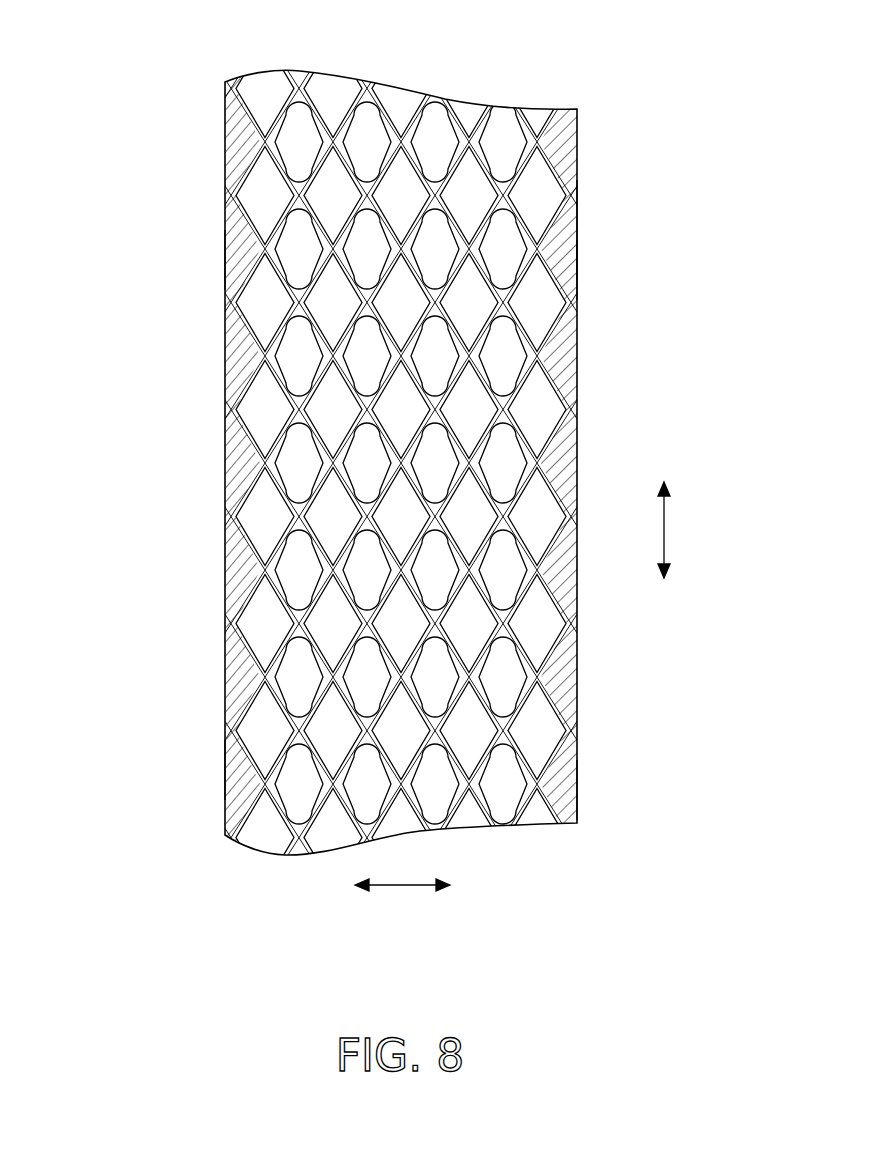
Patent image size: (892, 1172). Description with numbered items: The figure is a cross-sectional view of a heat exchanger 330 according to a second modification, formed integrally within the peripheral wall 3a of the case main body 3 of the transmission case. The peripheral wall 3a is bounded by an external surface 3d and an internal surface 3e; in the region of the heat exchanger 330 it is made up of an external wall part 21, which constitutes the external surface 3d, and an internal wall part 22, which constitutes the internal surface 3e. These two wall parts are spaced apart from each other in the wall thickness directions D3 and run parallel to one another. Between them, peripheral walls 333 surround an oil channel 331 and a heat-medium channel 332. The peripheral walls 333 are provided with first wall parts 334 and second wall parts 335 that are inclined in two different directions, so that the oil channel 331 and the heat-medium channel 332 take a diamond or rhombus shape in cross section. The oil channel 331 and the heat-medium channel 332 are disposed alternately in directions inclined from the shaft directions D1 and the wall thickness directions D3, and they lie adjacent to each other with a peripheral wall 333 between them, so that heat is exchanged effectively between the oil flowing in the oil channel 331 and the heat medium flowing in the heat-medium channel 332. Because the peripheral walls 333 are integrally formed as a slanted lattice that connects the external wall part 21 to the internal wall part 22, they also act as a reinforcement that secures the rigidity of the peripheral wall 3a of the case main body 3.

The case main body 3 is at (631, 191).
The peripheral wall 3a is at (577, 238).
The external surface 3d is at (579, 258).
The internal surface 3e is at (225, 260).
The external wall part 21 is at (578, 788).
The internal wall part 22 is at (225, 772).
The heat exchanger 330 is at (502, 795).
The oil channel 331 is at (362, 130).
The heat-medium channel 332 is at (257, 180).
The peripheral wall 333 is at (446, 465).
The first wall part 334 is at (522, 650).
The second wall part 335 is at (522, 707).
The shaft directions D1 is at (667, 530).
The wall thickness directions D3 is at (405, 890).